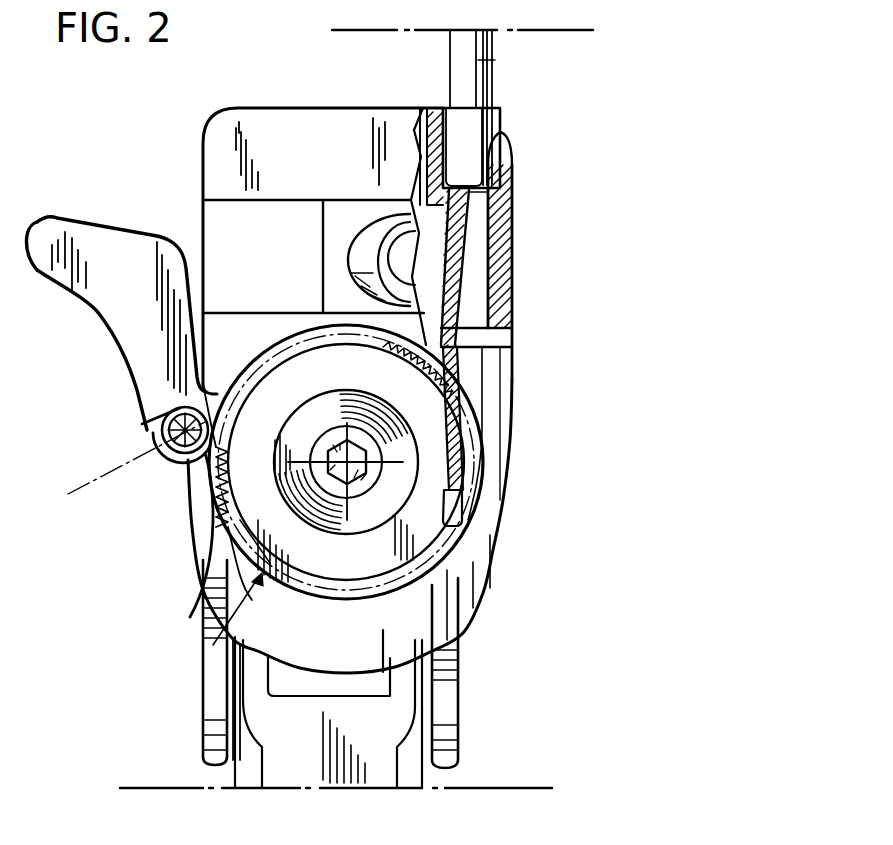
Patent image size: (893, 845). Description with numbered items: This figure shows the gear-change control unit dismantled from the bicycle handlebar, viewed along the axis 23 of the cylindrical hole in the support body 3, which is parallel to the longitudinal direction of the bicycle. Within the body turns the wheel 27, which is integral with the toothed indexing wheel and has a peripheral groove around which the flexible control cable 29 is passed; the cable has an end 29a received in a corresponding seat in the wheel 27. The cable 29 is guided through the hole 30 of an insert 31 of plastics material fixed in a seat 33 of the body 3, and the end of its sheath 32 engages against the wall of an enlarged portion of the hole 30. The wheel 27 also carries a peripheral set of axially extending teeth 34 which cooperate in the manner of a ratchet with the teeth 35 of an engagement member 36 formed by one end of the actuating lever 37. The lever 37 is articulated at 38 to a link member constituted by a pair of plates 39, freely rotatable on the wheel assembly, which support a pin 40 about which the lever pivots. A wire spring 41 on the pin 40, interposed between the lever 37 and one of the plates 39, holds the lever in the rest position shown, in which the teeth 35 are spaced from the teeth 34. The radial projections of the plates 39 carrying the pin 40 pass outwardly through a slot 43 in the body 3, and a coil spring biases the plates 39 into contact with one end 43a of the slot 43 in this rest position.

The support body 3 is at (247, 118).
The axis 23 is at (353, 443).
The wheel 27 is at (216, 653).
The flexible control cable 29 is at (470, 355).
The end of the cable 29a is at (450, 510).
The hole 30 is at (480, 306).
The insert 31 is at (502, 212).
The sheath 32 is at (448, 146).
The seat 33 is at (492, 60).
The teeth 34 is at (210, 592).
The teeth 35 is at (206, 558).
The engagement member 36 is at (187, 482).
The actuating lever 37 is at (113, 230).
The articulation 38 is at (128, 473).
The plates 39 is at (150, 480).
The pin 40 is at (162, 404).
The wire spring 41 is at (180, 404).
The slot 43 is at (458, 567).
The end of the slot 43a is at (252, 355).